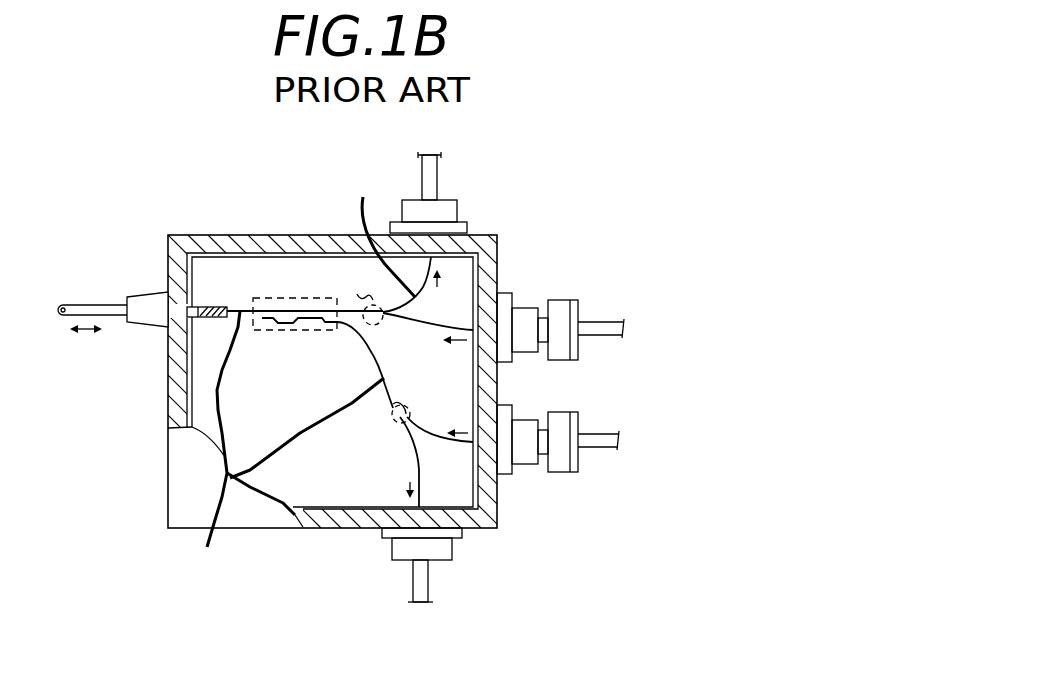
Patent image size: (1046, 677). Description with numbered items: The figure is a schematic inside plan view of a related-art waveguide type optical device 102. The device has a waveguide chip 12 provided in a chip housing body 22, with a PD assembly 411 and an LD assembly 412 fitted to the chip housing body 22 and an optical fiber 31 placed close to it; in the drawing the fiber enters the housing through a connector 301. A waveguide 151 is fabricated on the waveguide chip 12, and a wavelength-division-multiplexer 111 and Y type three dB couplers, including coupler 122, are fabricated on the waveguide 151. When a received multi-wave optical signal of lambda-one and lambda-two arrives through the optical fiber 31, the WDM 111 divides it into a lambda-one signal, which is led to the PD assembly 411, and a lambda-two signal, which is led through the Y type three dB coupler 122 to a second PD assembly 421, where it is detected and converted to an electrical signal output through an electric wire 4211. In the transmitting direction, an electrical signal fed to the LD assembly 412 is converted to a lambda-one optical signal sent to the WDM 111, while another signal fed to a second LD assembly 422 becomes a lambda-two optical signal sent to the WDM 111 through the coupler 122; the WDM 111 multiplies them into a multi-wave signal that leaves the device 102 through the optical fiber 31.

The waveguide type optical device 102 is at (518, 152).
The chip housing body 22 is at (228, 247).
The waveguide chip 12 is at (285, 278).
The waveguide 151 is at (291, 380).
The wavelength-division-multiplexer (WDM) 111 is at (275, 333).
The Y type 3 dB coupler 122 is at (392, 414).
The optical fiber 31 is at (77, 305).
The fiber connector 301 is at (143, 293).
The PD assembly 411 is at (441, 203).
The LD assembly 412 is at (562, 300).
The LD assembly 422 is at (562, 412).
The PD assembly 421 is at (530, 586).
The electric wire 4211 is at (428, 585).